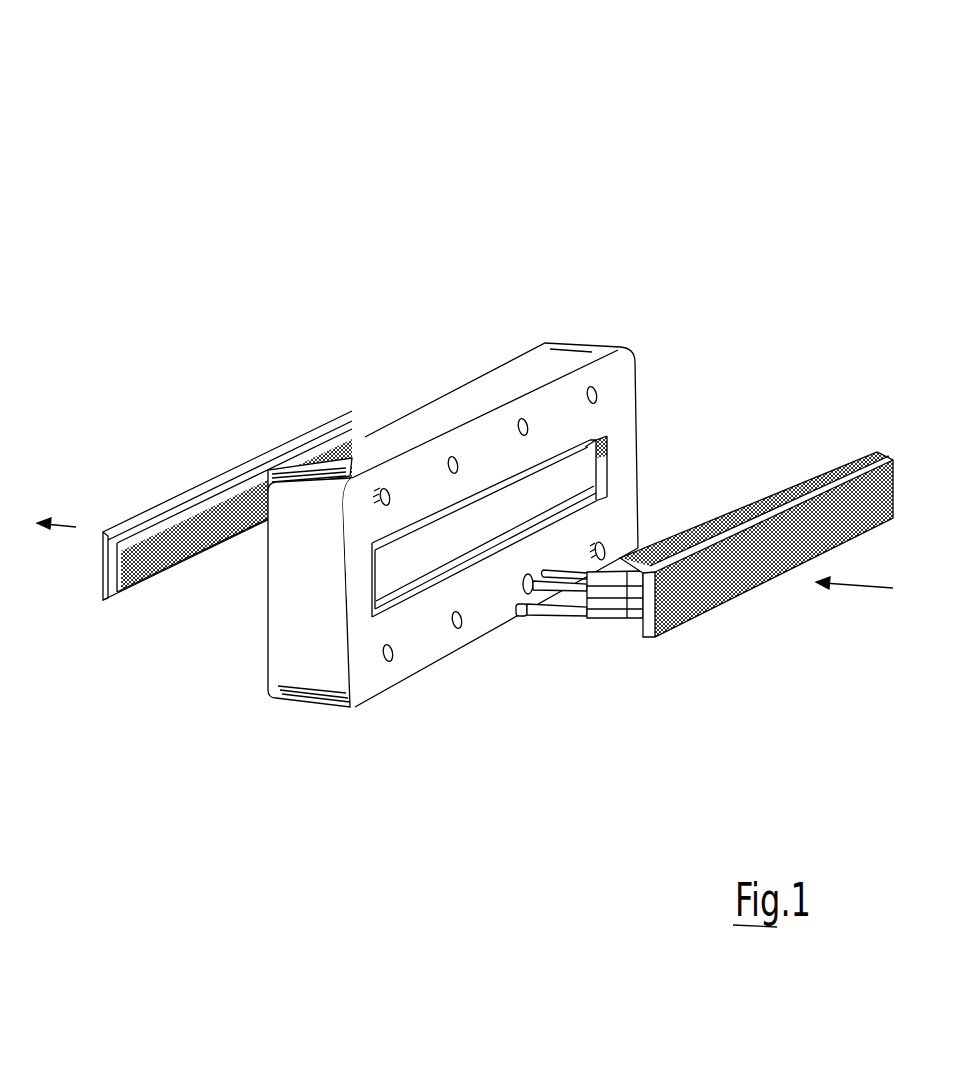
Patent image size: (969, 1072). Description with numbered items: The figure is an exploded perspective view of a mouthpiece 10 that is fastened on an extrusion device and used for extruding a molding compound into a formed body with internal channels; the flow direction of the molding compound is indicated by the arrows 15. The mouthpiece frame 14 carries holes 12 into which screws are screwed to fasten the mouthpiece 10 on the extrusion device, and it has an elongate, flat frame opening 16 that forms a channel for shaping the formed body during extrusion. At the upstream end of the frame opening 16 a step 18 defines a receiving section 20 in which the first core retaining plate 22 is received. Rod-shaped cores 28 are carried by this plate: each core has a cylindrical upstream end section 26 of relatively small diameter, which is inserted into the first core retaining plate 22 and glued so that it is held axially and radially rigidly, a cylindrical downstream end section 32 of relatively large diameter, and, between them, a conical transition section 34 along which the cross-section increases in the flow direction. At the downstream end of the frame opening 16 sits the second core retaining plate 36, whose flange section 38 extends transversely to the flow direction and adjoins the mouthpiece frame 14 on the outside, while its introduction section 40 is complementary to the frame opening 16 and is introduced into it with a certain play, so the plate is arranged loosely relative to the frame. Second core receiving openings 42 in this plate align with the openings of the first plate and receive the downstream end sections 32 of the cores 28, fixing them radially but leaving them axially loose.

The mouthpiece 10 is at (460, 412).
The holes 12 is at (600, 395).
The mouthpiece frame 14 is at (520, 485).
The arrow 15 is at (871, 590).
The frame opening 16 is at (593, 468).
The step 18 is at (593, 503).
The receiving section 20 is at (565, 481).
The first core retaining plate 22 is at (648, 620).
The upstream end section 26 is at (590, 619).
The cores 28 is at (547, 616).
The downstream end section 32 is at (518, 612).
The conical transition section 34 is at (568, 613).
The second core retaining plate 36 is at (227, 511).
The flange section 38 is at (107, 598).
The introduction section 40 is at (133, 533).
The second core receiving openings 42 is at (170, 523).